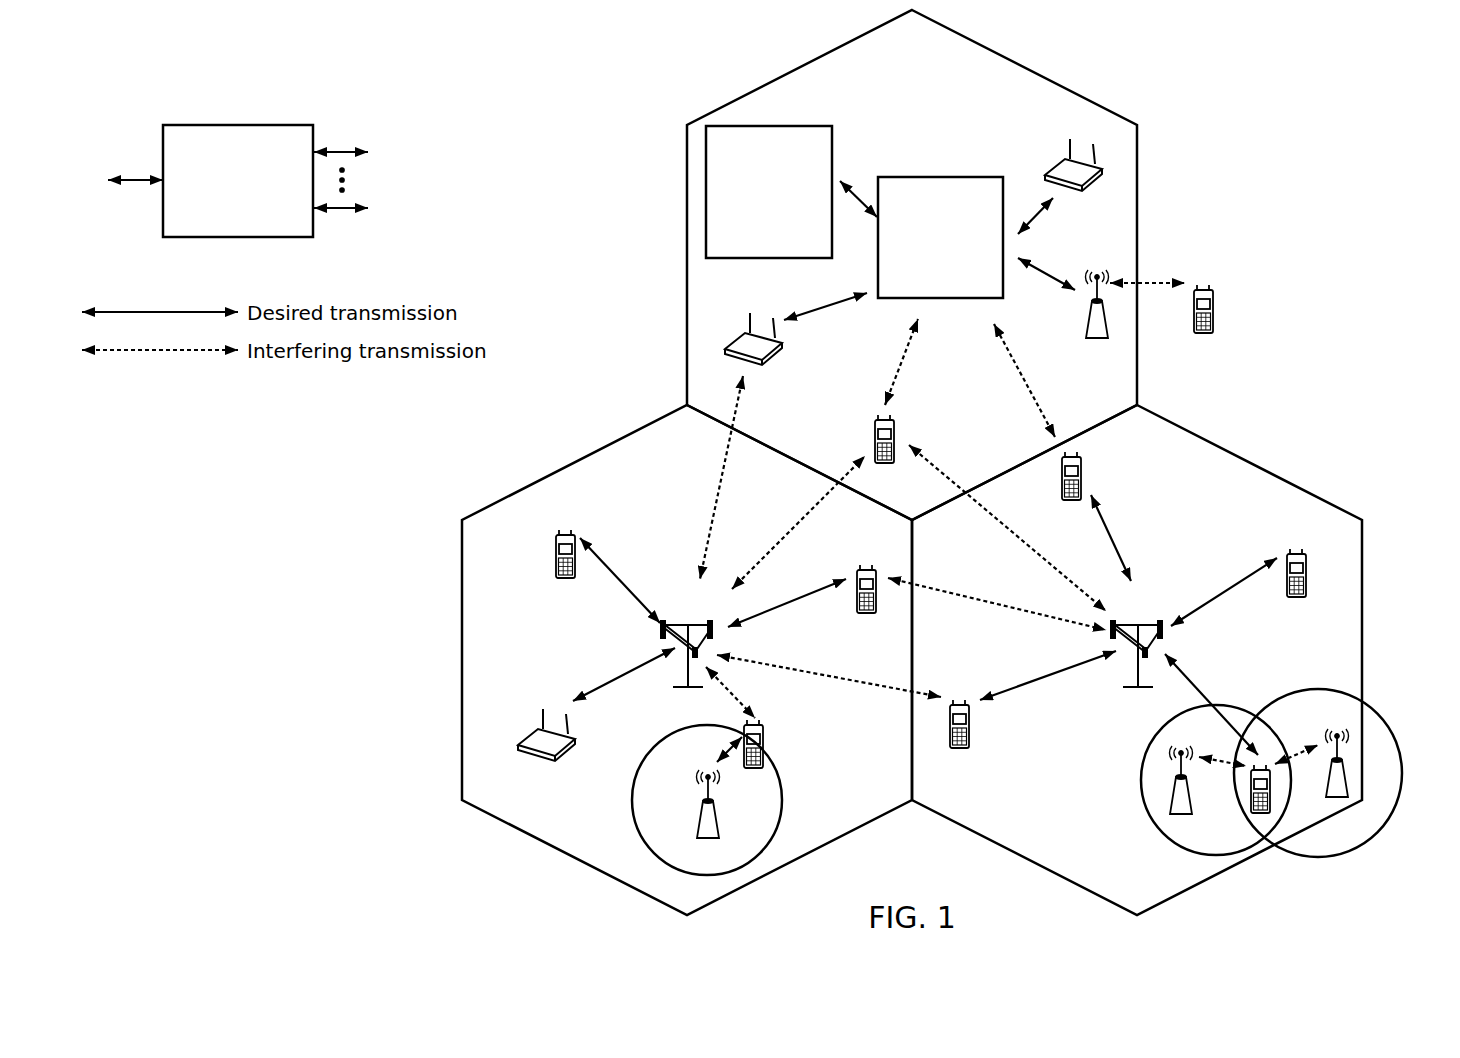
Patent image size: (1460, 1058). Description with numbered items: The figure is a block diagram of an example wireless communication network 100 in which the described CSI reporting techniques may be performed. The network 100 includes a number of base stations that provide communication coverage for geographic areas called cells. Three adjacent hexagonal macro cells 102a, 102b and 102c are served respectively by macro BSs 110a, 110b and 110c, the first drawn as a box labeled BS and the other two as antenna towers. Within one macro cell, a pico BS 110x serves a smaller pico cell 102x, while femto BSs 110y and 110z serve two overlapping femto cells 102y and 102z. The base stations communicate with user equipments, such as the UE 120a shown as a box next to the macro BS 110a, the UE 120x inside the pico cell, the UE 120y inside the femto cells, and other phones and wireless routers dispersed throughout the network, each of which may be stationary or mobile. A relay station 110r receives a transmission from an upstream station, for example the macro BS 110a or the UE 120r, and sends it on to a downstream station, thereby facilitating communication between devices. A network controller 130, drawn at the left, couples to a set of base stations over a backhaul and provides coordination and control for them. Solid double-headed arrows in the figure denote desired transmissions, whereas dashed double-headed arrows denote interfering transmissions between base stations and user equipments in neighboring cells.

The wireless communication network 100 is at (1294, 83).
The network controller 130 is at (234, 124).
The macro cell 102a is at (1028, 69).
The macro cell 102b is at (586, 461).
The macro cell 102c is at (1250, 463).
The pico cell 102x is at (656, 746).
The femto cell 102y is at (1149, 744).
The femto cell 102z is at (1310, 690).
The macro BS 110a is at (976, 178).
The macro BS 110b is at (686, 624).
The macro BS 110c is at (1137, 624).
The relay station 110r is at (1083, 322).
The pico BS 110x is at (716, 830).
The femto BS 110y is at (1192, 804).
The femto BS 110z is at (1349, 790).
The UE 120a is at (830, 126).
The UE 120r is at (1214, 325).
The UE 120x is at (765, 748).
The UE 120y is at (1251, 812).